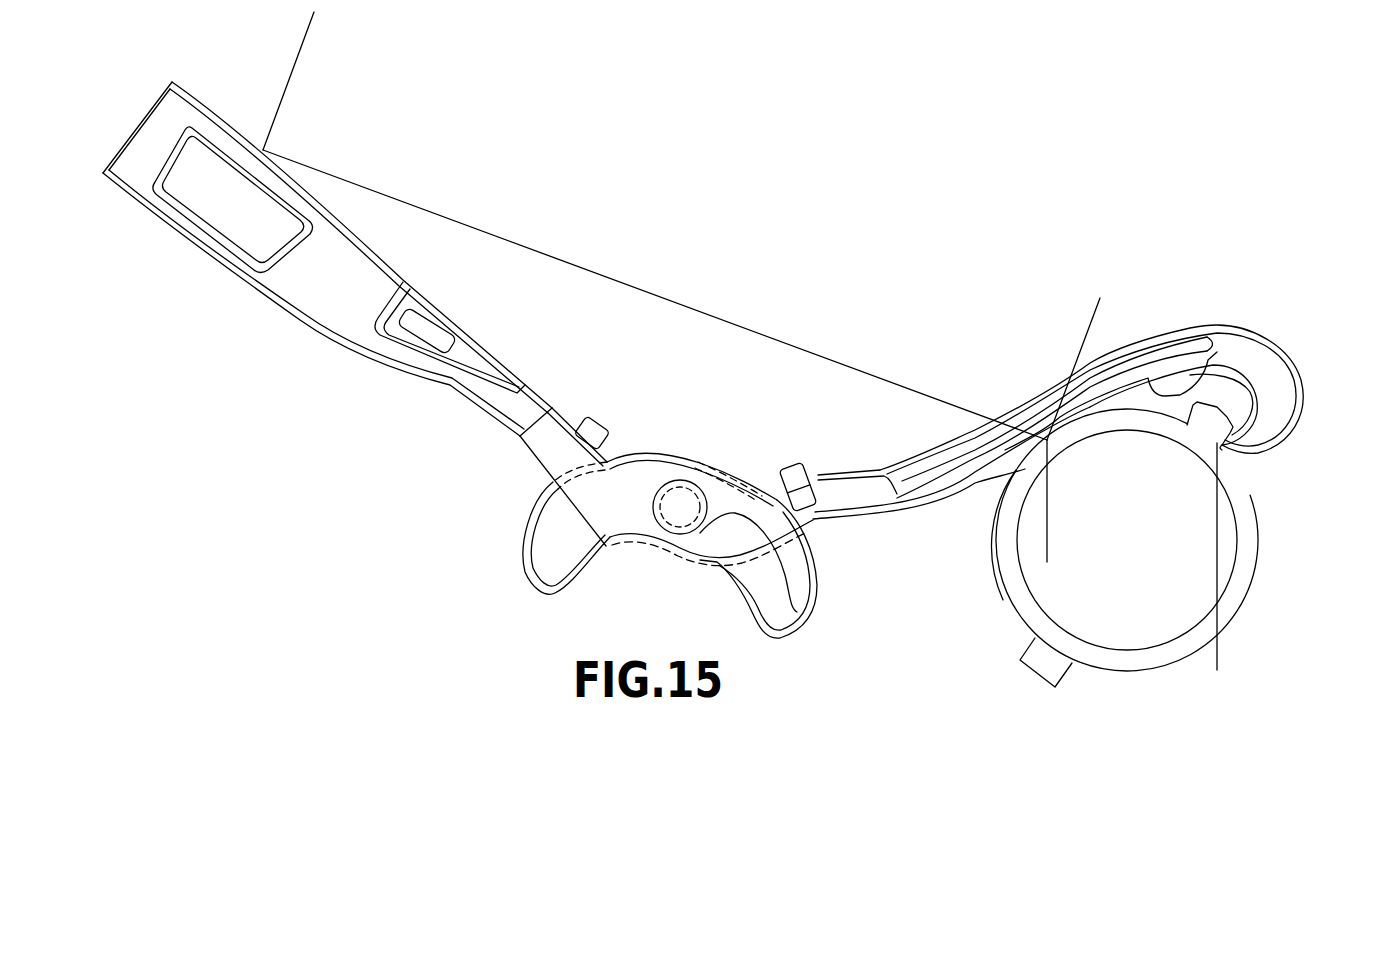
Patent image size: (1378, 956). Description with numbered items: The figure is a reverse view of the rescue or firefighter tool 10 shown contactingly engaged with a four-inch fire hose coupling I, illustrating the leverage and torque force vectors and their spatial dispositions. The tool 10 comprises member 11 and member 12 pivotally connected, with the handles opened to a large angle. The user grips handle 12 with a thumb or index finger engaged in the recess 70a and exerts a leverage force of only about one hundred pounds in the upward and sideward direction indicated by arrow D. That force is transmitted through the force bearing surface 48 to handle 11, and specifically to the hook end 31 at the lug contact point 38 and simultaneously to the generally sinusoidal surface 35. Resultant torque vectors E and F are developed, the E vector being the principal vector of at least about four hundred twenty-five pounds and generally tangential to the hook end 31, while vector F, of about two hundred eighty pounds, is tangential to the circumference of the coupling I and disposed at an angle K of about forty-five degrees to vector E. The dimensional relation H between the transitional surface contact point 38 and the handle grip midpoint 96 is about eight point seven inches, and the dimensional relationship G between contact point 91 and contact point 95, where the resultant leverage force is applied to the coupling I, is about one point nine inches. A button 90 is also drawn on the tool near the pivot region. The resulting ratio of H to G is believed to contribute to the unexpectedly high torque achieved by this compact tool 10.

The rescue or firefighter tool 10 is at (497, 514).
The member 11 is at (1272, 340).
The member 12 is at (327, 247).
The hook end 31 is at (1220, 448).
The generally sinusoidal surface 35 is at (1220, 330).
The transitional surface contact point 38 is at (1150, 378).
The force bearing surface 48 is at (812, 555).
The thumb grip engaging recess 70a is at (412, 318).
The release button 90 is at (768, 478).
The contact point 91 is at (1228, 447).
The contact point 95 is at (1002, 503).
The handle grip midpoint 96 is at (261, 147).
The leverage force arrow D is at (183, 268).
The principal torque vector E is at (1218, 575).
The torque vector F is at (1228, 452).
The dimensional relationship G is at (1047, 560).
The dimensional relation H is at (1088, 309).
The fire hose coupling I is at (1246, 603).
The angle K is at (1222, 538).